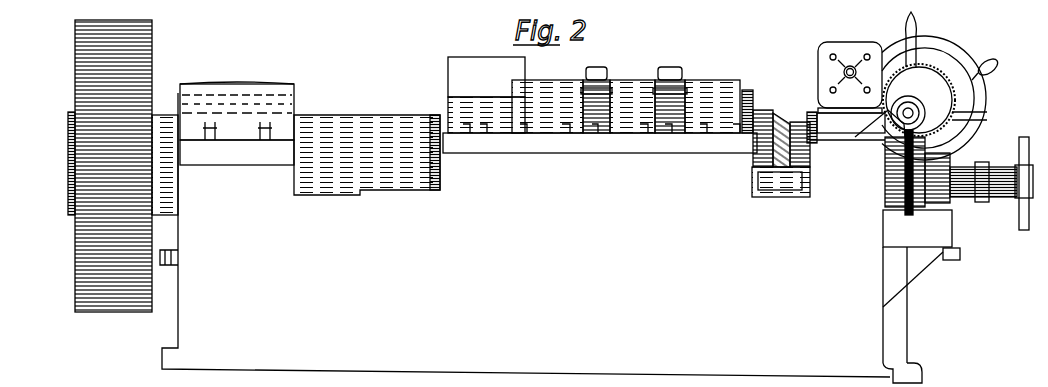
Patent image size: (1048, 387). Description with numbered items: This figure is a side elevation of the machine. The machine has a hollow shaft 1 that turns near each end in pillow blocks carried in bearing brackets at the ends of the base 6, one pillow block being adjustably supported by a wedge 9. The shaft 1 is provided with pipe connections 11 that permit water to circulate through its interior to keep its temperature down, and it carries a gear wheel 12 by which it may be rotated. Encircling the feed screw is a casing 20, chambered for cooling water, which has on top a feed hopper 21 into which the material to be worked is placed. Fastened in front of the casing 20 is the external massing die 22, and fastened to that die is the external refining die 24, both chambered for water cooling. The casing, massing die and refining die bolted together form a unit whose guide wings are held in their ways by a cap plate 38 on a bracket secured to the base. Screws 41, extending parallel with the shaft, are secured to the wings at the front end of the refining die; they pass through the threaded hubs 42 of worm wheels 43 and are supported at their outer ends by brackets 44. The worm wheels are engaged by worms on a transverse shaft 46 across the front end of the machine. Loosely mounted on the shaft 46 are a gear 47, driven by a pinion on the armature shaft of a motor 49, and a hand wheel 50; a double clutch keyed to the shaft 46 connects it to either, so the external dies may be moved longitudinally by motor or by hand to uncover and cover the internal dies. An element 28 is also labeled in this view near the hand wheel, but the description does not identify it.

The shaft 1 is at (373, 130).
The base 6 is at (525, 229).
The wedge 9 is at (933, 265).
The pipe connections 11 is at (1017, 196).
The gear wheel 12 is at (126, 310).
The casing 20 is at (554, 120).
The feed hopper 21 is at (486, 95).
The external massing die 22 is at (645, 120).
The external refining die 24 is at (722, 120).
The gear 28 is at (968, 135).
The cap plate 38 is at (468, 146).
The screws 41 is at (787, 197).
The threaded hubs 42 is at (883, 188).
The worm wheels 43 is at (887, 212).
The brackets 44 is at (937, 207).
The shaft 46 is at (902, 120).
The gear 47 is at (967, 94).
The motor 49 is at (832, 75).
The hand wheel 50 is at (941, 86).